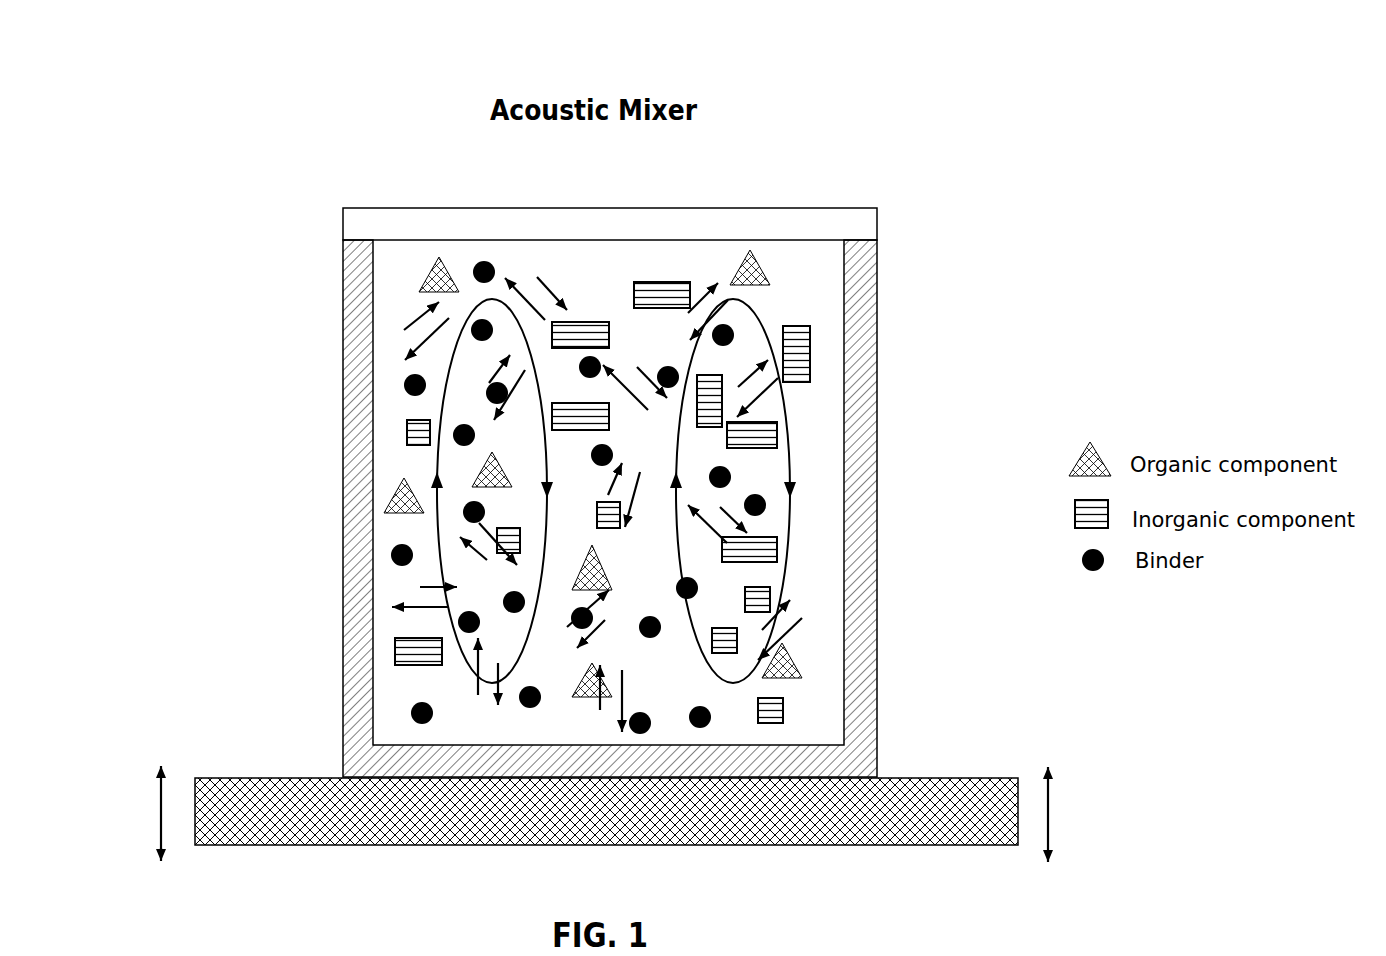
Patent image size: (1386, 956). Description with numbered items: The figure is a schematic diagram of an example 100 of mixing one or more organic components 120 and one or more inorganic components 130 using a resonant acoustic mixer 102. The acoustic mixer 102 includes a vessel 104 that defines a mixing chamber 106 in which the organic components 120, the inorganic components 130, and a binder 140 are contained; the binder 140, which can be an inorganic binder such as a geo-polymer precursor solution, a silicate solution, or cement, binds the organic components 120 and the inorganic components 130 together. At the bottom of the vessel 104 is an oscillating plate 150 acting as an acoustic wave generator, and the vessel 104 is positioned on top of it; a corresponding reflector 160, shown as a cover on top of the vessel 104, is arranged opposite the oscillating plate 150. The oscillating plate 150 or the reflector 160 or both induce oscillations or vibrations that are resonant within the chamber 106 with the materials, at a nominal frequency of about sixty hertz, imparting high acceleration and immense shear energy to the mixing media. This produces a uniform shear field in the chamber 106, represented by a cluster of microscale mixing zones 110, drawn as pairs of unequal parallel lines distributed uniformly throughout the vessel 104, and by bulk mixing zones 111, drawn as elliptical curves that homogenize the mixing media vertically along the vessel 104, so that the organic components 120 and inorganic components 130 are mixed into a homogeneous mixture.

The example of mixing 100 is at (97, 93).
The resonant acoustic mixer 102 is at (315, 178).
The vessel 104 is at (343, 293).
The mixing chamber 106 is at (819, 293).
The microscale mixing zones 110 is at (415, 334).
The bulk mixing zones 111 is at (437, 408).
The organic components 120 is at (384, 500).
The inorganic components 130 is at (395, 651).
The binder 140 is at (422, 713).
The oscillating plate 150 is at (237, 778).
The reflector 160 is at (343, 224).